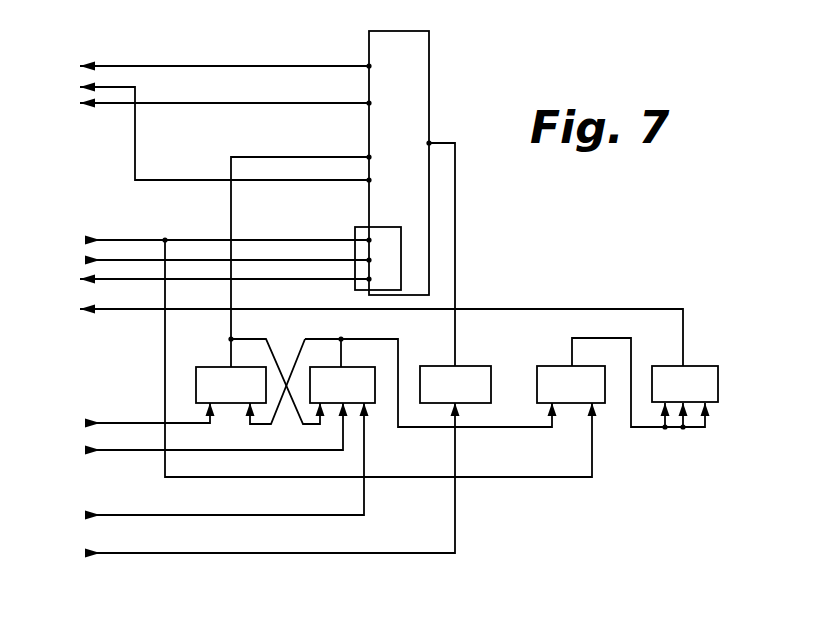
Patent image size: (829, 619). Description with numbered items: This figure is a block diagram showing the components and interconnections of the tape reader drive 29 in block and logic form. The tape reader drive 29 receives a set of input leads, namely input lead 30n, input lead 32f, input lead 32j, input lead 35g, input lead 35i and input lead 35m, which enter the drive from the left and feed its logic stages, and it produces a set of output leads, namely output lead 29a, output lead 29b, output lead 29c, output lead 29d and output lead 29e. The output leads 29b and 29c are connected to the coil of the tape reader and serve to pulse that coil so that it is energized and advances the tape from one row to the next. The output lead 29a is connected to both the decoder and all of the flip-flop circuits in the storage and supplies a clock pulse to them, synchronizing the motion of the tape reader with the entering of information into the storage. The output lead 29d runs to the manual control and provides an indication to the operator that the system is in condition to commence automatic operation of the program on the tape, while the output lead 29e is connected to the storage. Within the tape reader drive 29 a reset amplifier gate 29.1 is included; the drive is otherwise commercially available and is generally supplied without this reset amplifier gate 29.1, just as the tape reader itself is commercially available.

The tape reader drive 29 is at (531, 244).
The reset amplifier gate 29.1 is at (393, 237).
The output lead 29a is at (202, 109).
The output lead 29b is at (201, 67).
The output lead 29c is at (200, 129).
The output lead 29d is at (356, 334).
The output lead 29e is at (202, 283).
The input lead 30n is at (200, 261).
The input lead 35g is at (313, 345).
The input lead 35i is at (122, 418).
The input lead 35m is at (189, 432).
The input lead 32f is at (200, 462).
The input line 32j is at (246, 483).